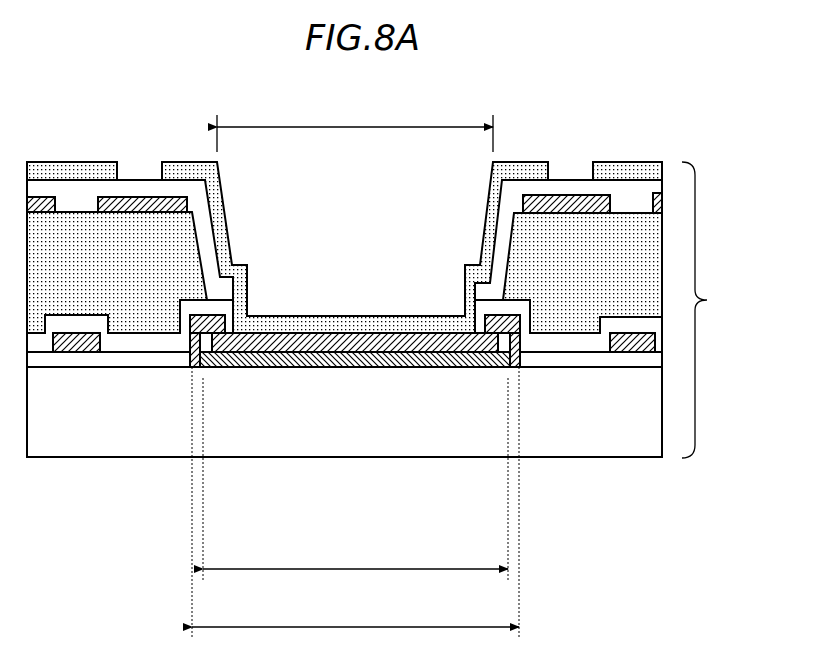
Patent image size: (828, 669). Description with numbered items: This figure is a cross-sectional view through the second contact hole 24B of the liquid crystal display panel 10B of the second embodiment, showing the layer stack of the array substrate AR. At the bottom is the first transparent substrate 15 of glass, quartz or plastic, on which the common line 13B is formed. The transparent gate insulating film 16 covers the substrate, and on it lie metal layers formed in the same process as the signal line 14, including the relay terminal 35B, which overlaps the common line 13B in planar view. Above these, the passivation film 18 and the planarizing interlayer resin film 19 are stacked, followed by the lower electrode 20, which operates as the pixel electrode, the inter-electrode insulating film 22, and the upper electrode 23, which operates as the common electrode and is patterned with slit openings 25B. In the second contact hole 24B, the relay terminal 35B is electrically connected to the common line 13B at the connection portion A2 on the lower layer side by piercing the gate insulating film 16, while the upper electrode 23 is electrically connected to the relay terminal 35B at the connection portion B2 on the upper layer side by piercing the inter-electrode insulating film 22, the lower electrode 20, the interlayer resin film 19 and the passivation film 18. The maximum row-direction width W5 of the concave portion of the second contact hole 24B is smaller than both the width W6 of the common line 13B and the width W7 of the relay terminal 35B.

The liquid crystal display panel 10B is at (68, 92).
The first transparent substrate 15 is at (612, 411).
The gate insulating film 16 is at (172, 358).
The passivation film 18 is at (122, 340).
The signal line 14 is at (65, 347).
The interlayer resin film 19 is at (65, 252).
The second contact hole 24B is at (335, 263).
The slit opening 25B is at (568, 172).
The inter-electrode insulating film 22 is at (80, 188).
The upper electrode 23 is at (624, 170).
The lower electrode 20 is at (145, 195).
The relay terminal 35B is at (206, 345).
The common line 13B is at (452, 348).
The connection portion B2 is at (395, 331).
The connection portion A2 is at (456, 346).
The maximum width of concave portion of second contact hole W5 is at (355, 123).
The width of common line W6 is at (355, 479).
The width of relay terminal W7 is at (355, 502).
The array substrate AR is at (715, 310).